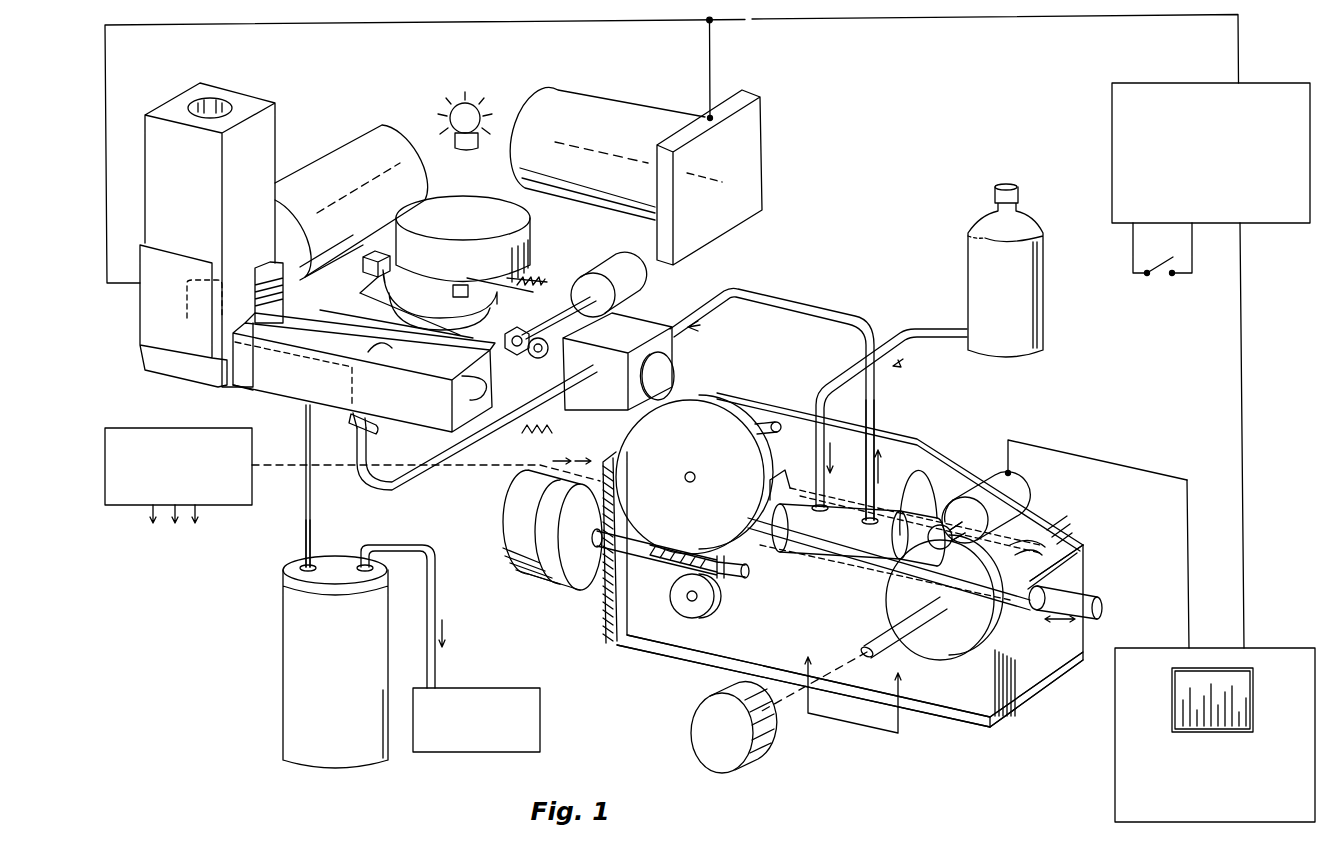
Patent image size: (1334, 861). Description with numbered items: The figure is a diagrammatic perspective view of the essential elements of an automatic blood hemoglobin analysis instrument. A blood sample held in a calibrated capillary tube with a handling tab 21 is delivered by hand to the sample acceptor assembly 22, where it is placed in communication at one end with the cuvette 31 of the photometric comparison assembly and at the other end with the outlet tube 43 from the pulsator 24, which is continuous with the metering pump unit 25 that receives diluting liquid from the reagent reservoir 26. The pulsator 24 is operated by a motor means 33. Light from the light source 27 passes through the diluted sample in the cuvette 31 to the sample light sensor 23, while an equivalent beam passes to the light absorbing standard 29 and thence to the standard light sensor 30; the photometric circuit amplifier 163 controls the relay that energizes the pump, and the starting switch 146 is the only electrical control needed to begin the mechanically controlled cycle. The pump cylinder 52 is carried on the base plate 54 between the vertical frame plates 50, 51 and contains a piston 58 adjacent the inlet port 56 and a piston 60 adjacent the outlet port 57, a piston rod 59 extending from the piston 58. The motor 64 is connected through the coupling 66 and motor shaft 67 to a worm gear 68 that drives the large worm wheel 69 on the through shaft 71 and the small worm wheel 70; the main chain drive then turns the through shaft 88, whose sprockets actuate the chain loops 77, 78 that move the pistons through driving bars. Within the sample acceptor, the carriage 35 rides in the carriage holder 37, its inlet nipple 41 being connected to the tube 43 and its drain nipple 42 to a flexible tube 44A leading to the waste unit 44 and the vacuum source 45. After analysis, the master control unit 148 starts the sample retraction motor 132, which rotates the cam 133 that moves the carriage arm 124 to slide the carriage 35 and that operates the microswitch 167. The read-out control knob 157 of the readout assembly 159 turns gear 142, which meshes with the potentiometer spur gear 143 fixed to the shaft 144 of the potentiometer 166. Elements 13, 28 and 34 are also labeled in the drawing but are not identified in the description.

The section line 13 is at (853, 665).
The handling tab 21 is at (263, 266).
The sample acceptor assembly 22 is at (311, 392).
The sample light sensor 23 is at (165, 316).
The pulsator 24 is at (643, 326).
The metering pump unit 25 is at (709, 679).
The reagent reservoir 26 is at (1040, 233).
The light source 27 is at (471, 101).
The cylinder 28 is at (358, 140).
The light absorbing standard 29 is at (607, 102).
The standard light sensor 30 is at (762, 107).
The cuvette 31 is at (168, 103).
The motor means 33 is at (607, 270).
The nut and groove 34 is at (480, 385).
The carriage 35 is at (303, 335).
The carriage holder 37 is at (252, 378).
The nipple 41 is at (352, 416).
The drain nipple 42 is at (305, 438).
The outlet tube 43 is at (410, 484).
The waste unit 44 is at (283, 606).
The flexible tube 44A is at (306, 538).
The vacuum source 45 is at (505, 688).
The vertical plate 50 is at (957, 697).
The vertical plate 51 is at (893, 433).
The pump cylinder 52 is at (820, 545).
The base plate 54 is at (1020, 712).
The inlet port 56 is at (816, 470).
The outlet port 57 is at (885, 507).
The piston 58 is at (773, 505).
The piston rod 59 is at (1086, 598).
The piston 60 is at (946, 524).
The motor 64 is at (507, 543).
The coupling 66 is at (537, 572).
The motor shaft 67 is at (607, 549).
The worm gear 68 is at (675, 562).
The large worm wheel 69 is at (688, 423).
The small worm wheel 70 is at (700, 614).
The through shaft 71 is at (762, 420).
The chain loop 77 is at (1020, 533).
The chain loop 78 is at (840, 562).
The through shaft 88 is at (1045, 567).
The carriage arm 124 is at (370, 426).
The sample retraction motor 132 is at (458, 204).
The cam 133 is at (400, 282).
The gear 142 is at (988, 630).
The potentiometer spur gear 143 is at (945, 500).
The shaft 144 is at (958, 497).
The starting switch 146 is at (1164, 262).
The master control unit 148 is at (150, 427).
The read-out control knob 157 is at (762, 756).
The readout assembly 159 is at (1268, 648).
The photometric circuit amplifier 163 is at (1262, 83).
The potentiometer 166 is at (990, 477).
The microswitch 167 is at (423, 286).